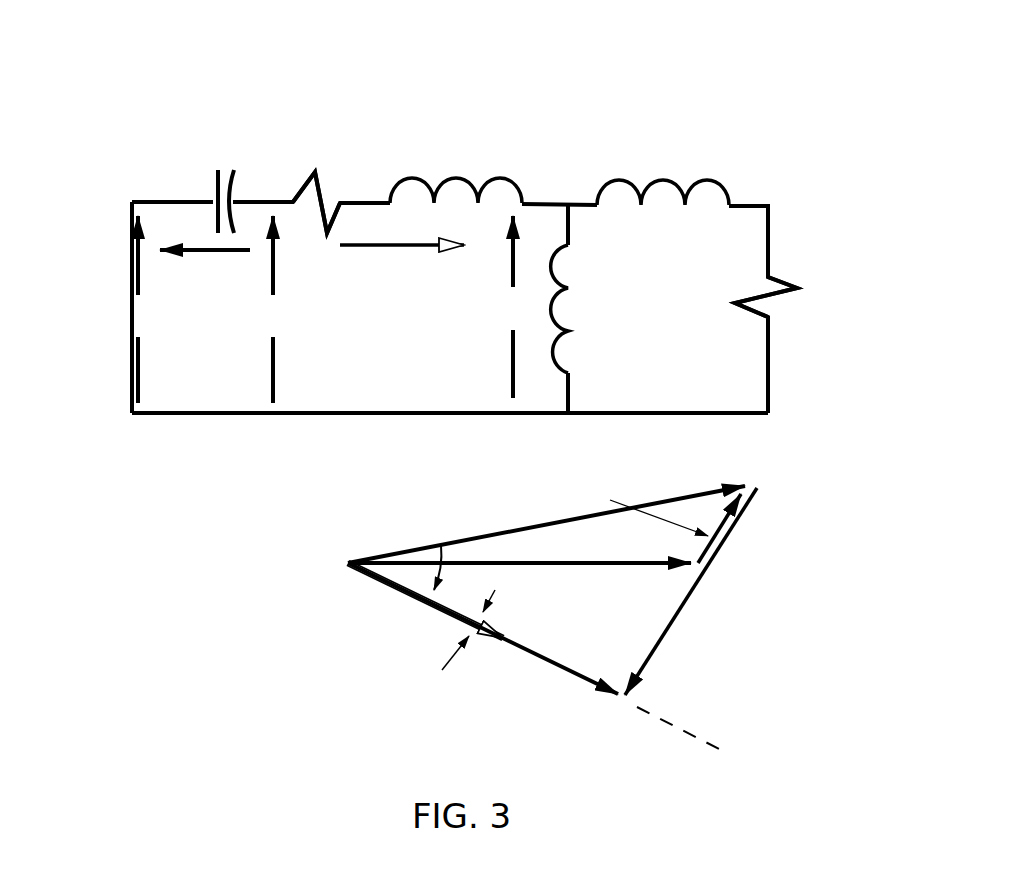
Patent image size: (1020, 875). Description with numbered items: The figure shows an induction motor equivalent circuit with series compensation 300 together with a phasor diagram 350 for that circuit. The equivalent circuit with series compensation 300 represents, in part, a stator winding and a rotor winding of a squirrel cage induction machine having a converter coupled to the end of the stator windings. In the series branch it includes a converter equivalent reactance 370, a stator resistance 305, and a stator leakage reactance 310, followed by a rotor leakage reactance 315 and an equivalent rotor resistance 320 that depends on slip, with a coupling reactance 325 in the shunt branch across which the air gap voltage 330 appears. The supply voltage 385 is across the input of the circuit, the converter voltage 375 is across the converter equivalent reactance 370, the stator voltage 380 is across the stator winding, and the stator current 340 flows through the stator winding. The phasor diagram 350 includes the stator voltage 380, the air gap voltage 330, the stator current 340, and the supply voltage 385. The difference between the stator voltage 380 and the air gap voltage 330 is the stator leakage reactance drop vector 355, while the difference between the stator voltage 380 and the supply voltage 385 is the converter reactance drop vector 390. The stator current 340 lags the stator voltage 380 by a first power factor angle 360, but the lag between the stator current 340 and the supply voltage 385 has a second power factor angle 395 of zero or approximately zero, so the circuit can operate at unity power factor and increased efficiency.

The induction motor equivalent circuit with series compensation 300 is at (140, 83).
The stator resistance 305 is at (317, 130).
The stator leakage reactance 310 is at (455, 130).
The rotor leakage reactance 315 is at (633, 130).
The equivalent rotor resistance 320 is at (808, 272).
The coupling reactance 325 is at (593, 290).
The air gap voltage 330 is at (507, 348).
The stator current 340 is at (405, 297).
The phasor diagram 350 is at (245, 570).
The vector jI1X1 355 is at (597, 457).
The power factor angle θ1 360 is at (468, 575).
The converter equivalent reactance 370 is at (223, 130).
The converter voltage 375 is at (230, 287).
The stator voltage 380 is at (265, 312).
The supply voltage 385 is at (122, 312).
The vector -jI1Xc 390 is at (727, 628).
The power factor angle θs 395 is at (510, 613).